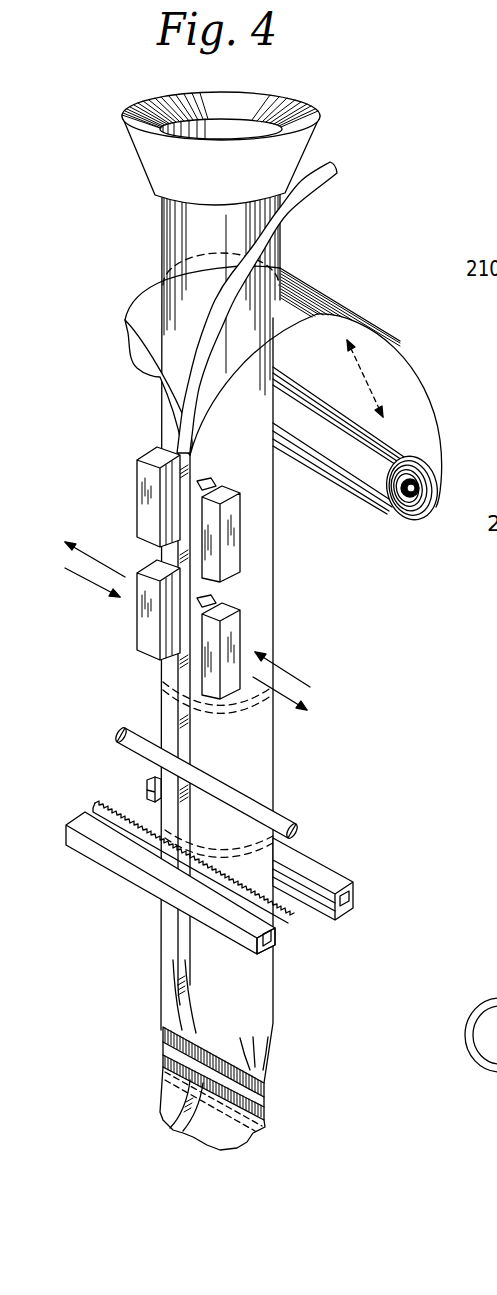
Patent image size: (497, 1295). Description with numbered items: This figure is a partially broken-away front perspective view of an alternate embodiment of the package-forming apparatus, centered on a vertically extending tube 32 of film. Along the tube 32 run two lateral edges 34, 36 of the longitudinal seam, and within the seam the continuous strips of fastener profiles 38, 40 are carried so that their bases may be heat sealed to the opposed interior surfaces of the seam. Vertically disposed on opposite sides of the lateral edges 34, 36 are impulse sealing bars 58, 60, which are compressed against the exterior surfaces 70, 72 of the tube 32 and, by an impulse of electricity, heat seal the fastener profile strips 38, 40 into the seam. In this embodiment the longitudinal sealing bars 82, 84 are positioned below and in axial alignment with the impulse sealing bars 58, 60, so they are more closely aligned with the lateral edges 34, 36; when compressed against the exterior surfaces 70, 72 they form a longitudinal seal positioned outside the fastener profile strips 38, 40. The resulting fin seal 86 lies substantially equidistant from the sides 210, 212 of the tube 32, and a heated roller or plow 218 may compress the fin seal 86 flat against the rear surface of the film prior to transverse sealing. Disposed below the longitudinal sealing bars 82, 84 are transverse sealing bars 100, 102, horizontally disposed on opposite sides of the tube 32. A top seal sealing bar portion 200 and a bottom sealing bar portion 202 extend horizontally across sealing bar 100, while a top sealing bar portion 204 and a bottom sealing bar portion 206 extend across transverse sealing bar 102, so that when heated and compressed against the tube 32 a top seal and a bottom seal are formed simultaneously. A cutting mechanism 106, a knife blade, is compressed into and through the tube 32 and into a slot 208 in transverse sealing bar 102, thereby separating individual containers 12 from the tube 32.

The container 12 is at (265, 1123).
The tube 32 is at (260, 790).
The lateral edge 34 is at (170, 413).
The lateral edge 36 is at (195, 417).
The continuous strip of fastener profiles 38 is at (322, 165).
The continuous strip of fastener profiles 40 is at (336, 178).
The impulse sealing bar 58 is at (137, 480).
The impulse sealing bar 60 is at (240, 530).
The exterior surface 70 is at (183, 710).
The exterior surface 72 is at (190, 750).
The longitudinal sealing bar 82 is at (137, 563).
The longitudinal sealing bar 84 is at (240, 620).
The fin seal 86 is at (177, 815).
The transverse sealing bar 100 is at (208, 908).
The transverse sealing bar 102 is at (356, 886).
The cutting mechanism 106 is at (285, 915).
The top seal sealing bar portion 200 is at (267, 940).
The bottom sealing bar portion 202 is at (275, 932).
The top sealing bar portion 204 is at (345, 912).
The bottom sealing bar portion 206 is at (343, 897).
The slot 208 is at (305, 885).
The side 210 is at (162, 993).
The side 212 is at (273, 1023).
The heated roller or plow 218 is at (118, 727).